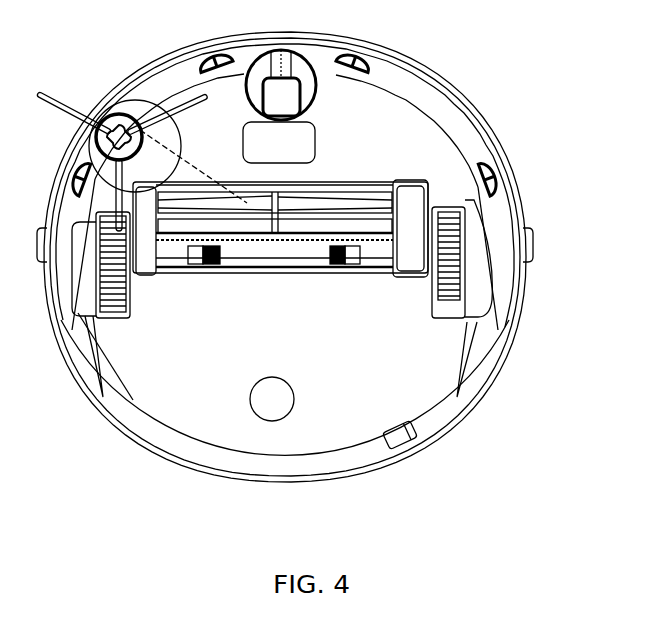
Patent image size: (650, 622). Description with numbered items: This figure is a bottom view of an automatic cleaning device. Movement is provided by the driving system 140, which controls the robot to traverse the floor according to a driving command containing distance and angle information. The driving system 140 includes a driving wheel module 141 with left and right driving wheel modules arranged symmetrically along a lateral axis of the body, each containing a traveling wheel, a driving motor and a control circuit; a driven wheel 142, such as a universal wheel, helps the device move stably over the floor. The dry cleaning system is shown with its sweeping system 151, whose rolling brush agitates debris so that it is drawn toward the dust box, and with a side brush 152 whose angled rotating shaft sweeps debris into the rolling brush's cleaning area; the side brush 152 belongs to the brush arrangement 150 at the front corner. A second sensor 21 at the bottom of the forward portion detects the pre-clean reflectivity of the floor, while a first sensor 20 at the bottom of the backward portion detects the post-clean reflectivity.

The first sensor 20 is at (272, 399).
The second sensor 21 is at (293, 133).
The driving system 140 is at (342, 225).
The driving wheel module 141 is at (472, 212).
The driven wheel 142 is at (318, 95).
The side brush assembly 150 is at (142, 144).
The sweeping system 151 is at (111, 114).
The side brush 152 is at (103, 118).